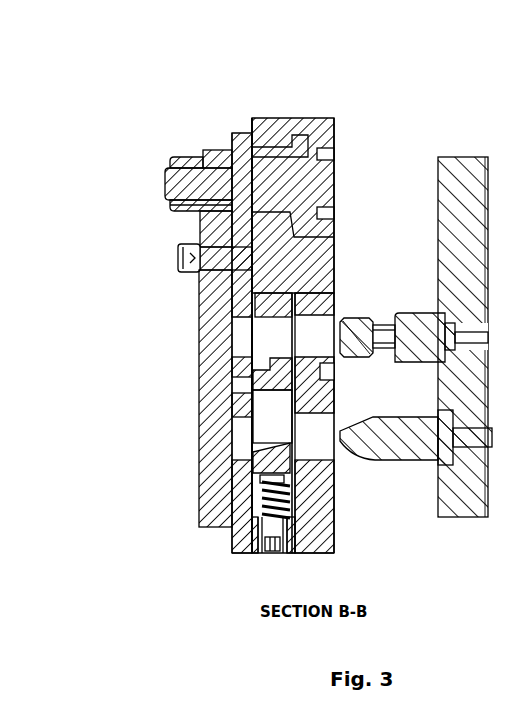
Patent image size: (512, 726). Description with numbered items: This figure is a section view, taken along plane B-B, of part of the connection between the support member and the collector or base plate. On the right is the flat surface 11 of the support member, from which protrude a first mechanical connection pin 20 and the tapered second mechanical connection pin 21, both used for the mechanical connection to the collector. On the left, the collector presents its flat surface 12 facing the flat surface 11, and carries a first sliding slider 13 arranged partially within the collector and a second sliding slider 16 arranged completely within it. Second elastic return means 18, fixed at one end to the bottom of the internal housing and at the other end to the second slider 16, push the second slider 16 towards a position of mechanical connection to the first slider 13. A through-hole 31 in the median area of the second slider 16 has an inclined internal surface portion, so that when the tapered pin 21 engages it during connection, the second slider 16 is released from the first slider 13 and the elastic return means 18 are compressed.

The flat surface 11 is at (437, 183).
The flat surface 12 is at (339, 143).
The first sliding slider 13 is at (270, 294).
The second sliding slider 16 is at (268, 443).
The second elastic return means 18 is at (270, 490).
The first mechanical connection pin 20 is at (360, 333).
The second mechanical connection pin 21 is at (416, 461).
The through-hole 31 is at (265, 393).